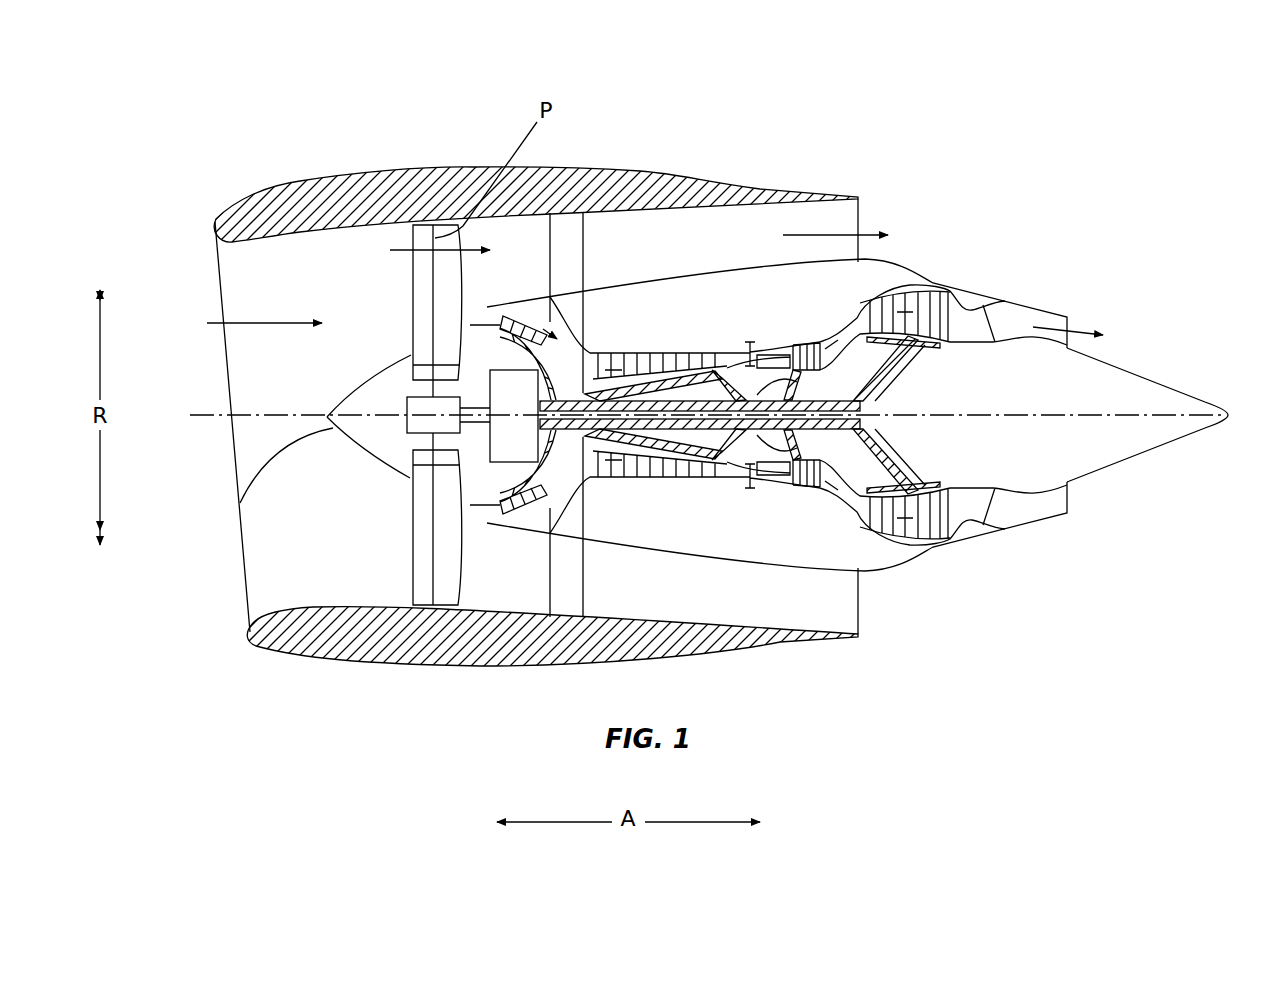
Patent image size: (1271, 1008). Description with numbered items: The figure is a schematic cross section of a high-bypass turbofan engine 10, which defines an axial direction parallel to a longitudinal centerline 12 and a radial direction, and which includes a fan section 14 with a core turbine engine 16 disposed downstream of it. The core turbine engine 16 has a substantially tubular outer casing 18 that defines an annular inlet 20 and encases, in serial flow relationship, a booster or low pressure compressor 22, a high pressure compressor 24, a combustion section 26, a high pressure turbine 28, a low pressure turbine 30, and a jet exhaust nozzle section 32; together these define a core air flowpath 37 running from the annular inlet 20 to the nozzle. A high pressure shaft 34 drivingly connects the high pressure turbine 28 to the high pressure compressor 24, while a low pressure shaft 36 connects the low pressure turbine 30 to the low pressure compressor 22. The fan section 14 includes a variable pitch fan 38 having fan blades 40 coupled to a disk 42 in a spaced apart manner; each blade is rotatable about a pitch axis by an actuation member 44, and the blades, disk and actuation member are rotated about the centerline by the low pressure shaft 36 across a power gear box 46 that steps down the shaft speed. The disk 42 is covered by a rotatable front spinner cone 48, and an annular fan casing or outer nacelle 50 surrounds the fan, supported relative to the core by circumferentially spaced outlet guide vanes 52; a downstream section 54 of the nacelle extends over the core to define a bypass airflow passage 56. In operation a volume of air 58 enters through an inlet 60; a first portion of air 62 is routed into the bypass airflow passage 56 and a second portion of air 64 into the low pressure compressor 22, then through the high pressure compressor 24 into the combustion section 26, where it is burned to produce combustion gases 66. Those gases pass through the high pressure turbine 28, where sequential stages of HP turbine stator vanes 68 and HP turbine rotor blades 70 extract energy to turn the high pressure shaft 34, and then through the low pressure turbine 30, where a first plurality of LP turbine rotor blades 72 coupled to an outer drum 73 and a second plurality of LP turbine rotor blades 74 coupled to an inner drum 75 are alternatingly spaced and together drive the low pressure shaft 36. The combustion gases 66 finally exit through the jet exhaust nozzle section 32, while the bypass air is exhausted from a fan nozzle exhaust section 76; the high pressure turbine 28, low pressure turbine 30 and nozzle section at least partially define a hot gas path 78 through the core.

The turbofan engine 10 is at (990, 180).
The longitudinal centerline 12 is at (1153, 417).
The fan section 14 is at (450, 138).
The core turbine engine 16 is at (740, 315).
The outer casing 18 is at (728, 562).
The annular inlet 20 is at (497, 513).
The low pressure compressor 22 is at (540, 473).
The high pressure compressor 24 is at (610, 462).
The combustion section 26 is at (765, 480).
The high pressure turbine 28 is at (892, 478).
The low pressure turbine 30 is at (937, 532).
The jet exhaust nozzle section 32 is at (993, 517).
The high pressure shaft 34 is at (807, 375).
The low pressure shaft 36 is at (893, 377).
The core air flowpath 37 is at (570, 468).
The variable pitch fan 38 is at (378, 465).
The fan blades 40 is at (410, 553).
The disk 42 is at (428, 373).
The actuation member 44 is at (407, 397).
The power gear box 46 is at (530, 392).
The front spinner cone 48 is at (241, 502).
The outer nacelle 50 is at (452, 667).
The outlet guide vanes 52 is at (583, 247).
The downstream section of the nacelle 54 is at (800, 188).
The bypass airflow passage 56 is at (674, 252).
The volume of air 58 is at (262, 322).
The inlet 60 is at (245, 613).
The first portion of air 62 is at (425, 252).
The second portion of air 64 is at (487, 307).
The combustion gases 66 is at (858, 318).
The HP turbine stator vanes 68 is at (780, 482).
The HP turbine rotor blades 70 is at (800, 465).
The first plurality of LP turbine rotor blades 72 is at (872, 515).
The outer drum 73 is at (930, 290).
The second plurality of LP turbine rotor blades 74 is at (878, 535).
The inner drum 75 is at (847, 498).
The fan nozzle exhaust section 76 is at (848, 222).
The hot gas path 78 is at (848, 325).